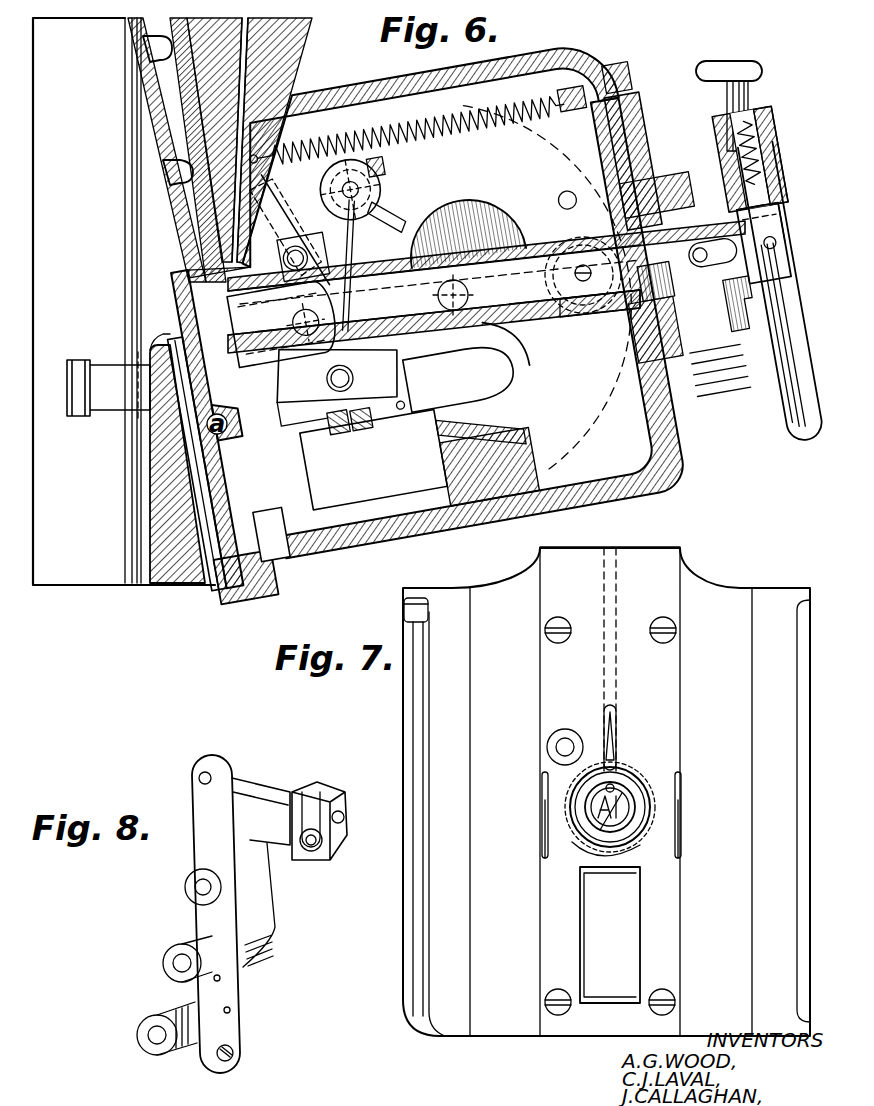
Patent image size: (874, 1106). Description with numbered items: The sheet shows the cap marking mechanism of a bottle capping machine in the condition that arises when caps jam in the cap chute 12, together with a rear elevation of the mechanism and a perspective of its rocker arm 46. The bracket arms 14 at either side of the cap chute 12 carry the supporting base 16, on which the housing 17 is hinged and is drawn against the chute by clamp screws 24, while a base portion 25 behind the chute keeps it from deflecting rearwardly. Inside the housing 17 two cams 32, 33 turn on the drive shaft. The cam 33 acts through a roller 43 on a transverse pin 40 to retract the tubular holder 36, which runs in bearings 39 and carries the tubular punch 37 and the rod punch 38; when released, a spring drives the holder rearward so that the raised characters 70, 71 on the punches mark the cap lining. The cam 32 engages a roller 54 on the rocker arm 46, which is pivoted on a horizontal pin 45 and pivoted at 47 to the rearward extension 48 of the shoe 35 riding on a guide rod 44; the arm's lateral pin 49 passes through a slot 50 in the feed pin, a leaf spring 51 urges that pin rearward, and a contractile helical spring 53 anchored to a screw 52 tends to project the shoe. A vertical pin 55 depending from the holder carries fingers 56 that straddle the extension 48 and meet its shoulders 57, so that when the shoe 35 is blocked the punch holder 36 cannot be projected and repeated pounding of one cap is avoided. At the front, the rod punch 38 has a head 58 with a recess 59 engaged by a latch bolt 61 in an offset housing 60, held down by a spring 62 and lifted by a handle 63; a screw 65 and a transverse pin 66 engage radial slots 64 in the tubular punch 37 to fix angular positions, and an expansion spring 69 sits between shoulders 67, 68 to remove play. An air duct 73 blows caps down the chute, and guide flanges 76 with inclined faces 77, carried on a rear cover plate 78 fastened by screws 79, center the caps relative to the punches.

In FIG. 6, the cap chute 12 is at (216, 584).
In FIG. 6, the arms 14 is at (82, 570).
In FIG. 6, the supporting base 16 is at (150, 228).
In FIG. 6, the housing 17 is at (550, 58).
In FIG. 7, the housing 17 is at (730, 592).
In FIG. 6, the clamp screws 24 is at (762, 398).
In FIG. 6, the base portion 25 is at (160, 498).
In FIG. 6, the cam 32 is at (470, 206).
In FIG. 6, the cam 33 is at (513, 350).
In FIG. 6, the shoe 35 is at (293, 500).
In FIG. 7, the shoe 35 is at (598, 944).
In FIG. 6, the tubular holder 36 is at (524, 240).
In FIG. 7, the tubular holder 36 is at (622, 775).
In FIG. 6, the punch 37 is at (478, 292).
In FIG. 7, the punch 37 is at (636, 812).
In FIG. 7, the punch 38 is at (595, 832).
In FIG. 6, the bearings 39 is at (190, 285).
In FIG. 6, the transverse pin 40 is at (583, 312).
In FIG. 6, the roller 43 is at (582, 246).
In FIG. 6, the guide rod 44 is at (368, 458).
In FIG. 6, the horizontal pin 45 is at (300, 306).
In FIG. 6, the rocker arm 46 is at (325, 416).
In FIG. 8, the rocker arm 46 is at (255, 920).
In FIG. 6, the pivot 47 is at (327, 393).
In FIG. 6, the rearward extension 48 is at (360, 416).
In FIG. 6, the lateral pin 49 is at (292, 250).
In FIG. 6, the slot 50 is at (347, 252).
In FIG. 6, the leaf spring 51 is at (400, 206).
In FIG. 6, the screw 52 is at (594, 106).
In FIG. 6, the contractile helical spring 53 is at (492, 122).
In FIG. 6, the roller 54 is at (386, 178).
In FIG. 6, the vertical pin 55 is at (438, 298).
In FIG. 6, the fingers 56 is at (434, 374).
In FIG. 6, the shoulders 57 is at (388, 398).
In FIG. 6, the head 58 is at (778, 248).
In FIG. 6, the recess 59 is at (777, 204).
In FIG. 6, the housing 60 is at (752, 112).
In FIG. 6, the latch bolt 61 is at (770, 167).
In FIG. 6, the spring 62 is at (762, 137).
In FIG. 6, the handle 63 is at (718, 62).
In FIG. 6, the radial slots 64 is at (722, 257).
In FIG. 6, the screw 65 is at (722, 320).
In FIG. 6, the transverse pin 66 is at (724, 254).
In FIG. 6, the shoulder 67 is at (666, 214).
In FIG. 6, the shoulder 68 is at (640, 314).
In FIG. 6, the expansion spring 69 is at (592, 274).
In FIG. 6, the raised characters 70 is at (160, 318).
In FIG. 7, the raised characters 70 is at (604, 788).
In FIG. 6, the raised characters 71 is at (183, 348).
In FIG. 7, the raised characters 71 is at (618, 800).
In FIG. 6, the air duct 73 is at (244, 74).
In FIG. 7, the air duct 73 is at (616, 732).
In FIG. 7, the guide flanges 76 is at (544, 830).
In FIG. 7, the inclined inner faces 77 is at (545, 772).
In FIG. 6, the rear cover plate 78 is at (150, 123).
In FIG. 7, the rear cover plate 78 is at (668, 668).
In FIG. 7, the screws 79 is at (558, 618).